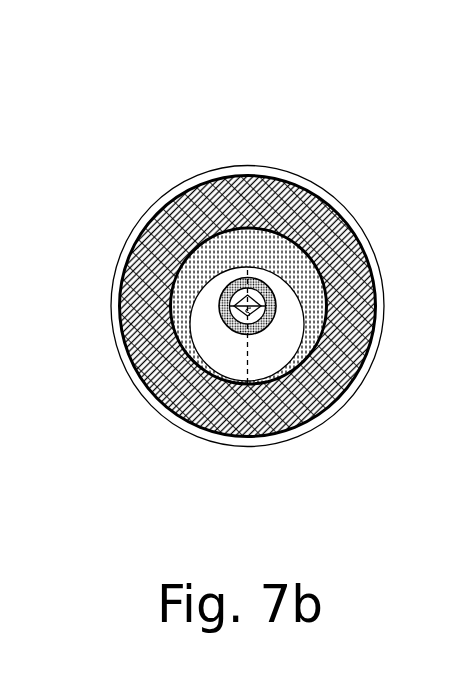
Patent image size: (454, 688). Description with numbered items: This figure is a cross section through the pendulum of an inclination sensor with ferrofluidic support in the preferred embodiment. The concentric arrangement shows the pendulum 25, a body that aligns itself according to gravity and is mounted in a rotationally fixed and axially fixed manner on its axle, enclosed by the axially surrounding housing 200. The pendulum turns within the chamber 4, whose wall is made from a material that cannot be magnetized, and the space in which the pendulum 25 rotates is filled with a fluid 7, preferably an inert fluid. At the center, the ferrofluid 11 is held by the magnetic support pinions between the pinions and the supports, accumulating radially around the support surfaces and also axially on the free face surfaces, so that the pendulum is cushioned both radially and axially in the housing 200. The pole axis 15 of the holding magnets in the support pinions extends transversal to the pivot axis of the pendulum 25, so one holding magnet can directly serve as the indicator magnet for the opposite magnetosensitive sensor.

The fluid 7 is at (228, 228).
The chamber 4 is at (247, 248).
The ferrofluid 11 is at (252, 284).
The pole axis 15 is at (243, 357).
The pendulum 25 is at (203, 334).
The housing 200 is at (235, 331).